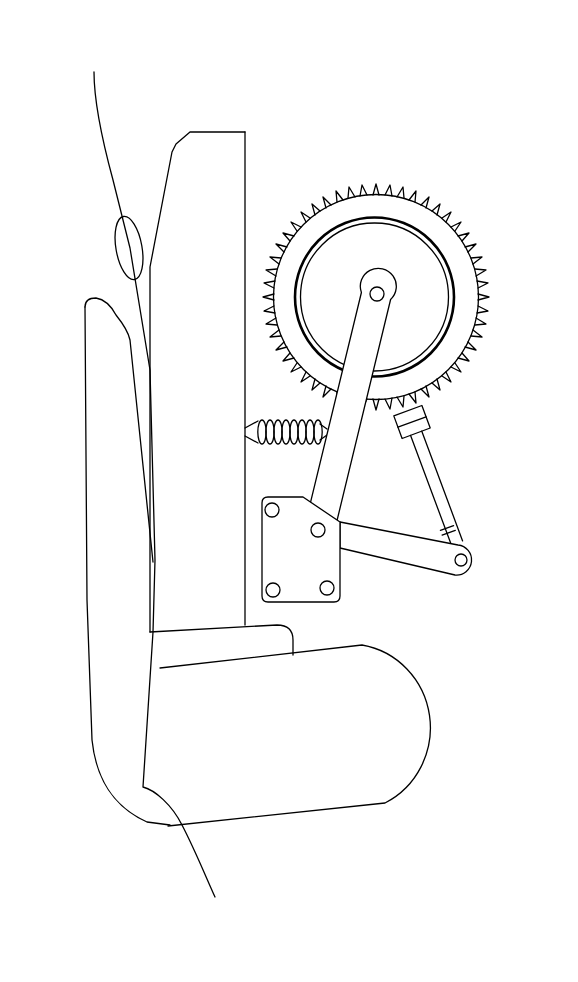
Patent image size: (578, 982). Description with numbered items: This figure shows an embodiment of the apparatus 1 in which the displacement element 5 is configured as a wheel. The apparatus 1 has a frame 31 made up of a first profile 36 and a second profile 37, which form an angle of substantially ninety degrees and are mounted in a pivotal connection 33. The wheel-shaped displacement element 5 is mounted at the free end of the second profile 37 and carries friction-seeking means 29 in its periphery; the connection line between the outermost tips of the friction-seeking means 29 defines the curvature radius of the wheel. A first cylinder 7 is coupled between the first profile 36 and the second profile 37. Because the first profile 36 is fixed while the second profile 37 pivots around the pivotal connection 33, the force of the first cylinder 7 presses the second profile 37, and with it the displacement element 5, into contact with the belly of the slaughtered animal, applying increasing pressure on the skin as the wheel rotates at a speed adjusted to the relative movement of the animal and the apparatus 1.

The apparatus 1 is at (344, 170).
The displacement element 5 is at (425, 215).
The friction-seeking means 29 is at (480, 347).
The first cylinder 7 is at (443, 490).
The second profile 37 is at (337, 457).
The pivotal connection 33 is at (312, 532).
The frame 31 is at (350, 557).
The first profile 36 is at (447, 568).